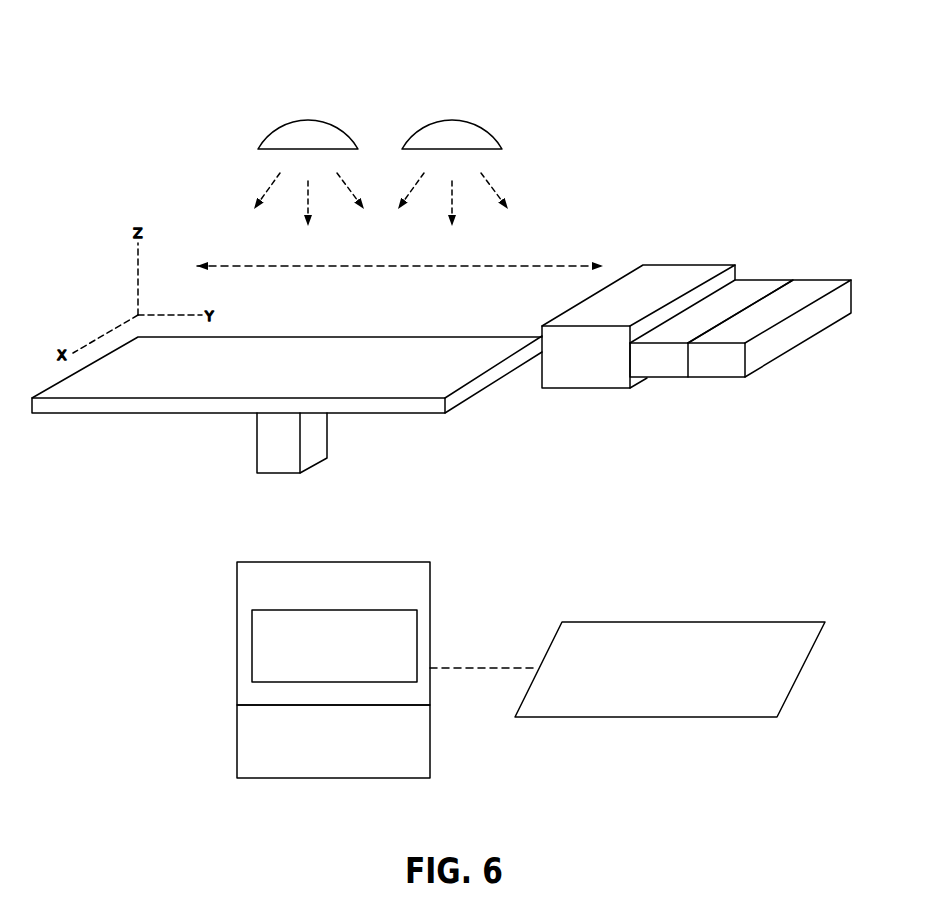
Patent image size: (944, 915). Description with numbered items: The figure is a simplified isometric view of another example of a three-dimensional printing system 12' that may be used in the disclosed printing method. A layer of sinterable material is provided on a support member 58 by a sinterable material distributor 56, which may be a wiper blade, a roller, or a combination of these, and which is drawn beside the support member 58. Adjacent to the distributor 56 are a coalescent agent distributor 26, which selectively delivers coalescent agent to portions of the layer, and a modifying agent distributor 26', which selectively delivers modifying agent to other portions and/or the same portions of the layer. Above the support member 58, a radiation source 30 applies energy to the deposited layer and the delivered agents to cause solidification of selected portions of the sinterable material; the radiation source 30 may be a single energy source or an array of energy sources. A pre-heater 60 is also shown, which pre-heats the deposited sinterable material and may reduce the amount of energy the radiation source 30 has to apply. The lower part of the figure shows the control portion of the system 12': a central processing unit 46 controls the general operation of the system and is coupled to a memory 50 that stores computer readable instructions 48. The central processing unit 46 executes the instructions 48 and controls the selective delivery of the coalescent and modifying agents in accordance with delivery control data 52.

The printing system 12' is at (641, 37).
The radiation source 30 is at (308, 149).
The pre-heater 60 is at (452, 149).
The support member 58 is at (338, 337).
The sinterable material distributor 56 is at (690, 264).
The coalescent agent distributor 26 is at (711, 289).
The modifying agent distributor 26' is at (769, 289).
The memory 50 is at (251, 584).
The computer readable instructions 48 is at (252, 644).
The central processing unit 46 is at (237, 740).
The delivery control data 52 is at (690, 622).